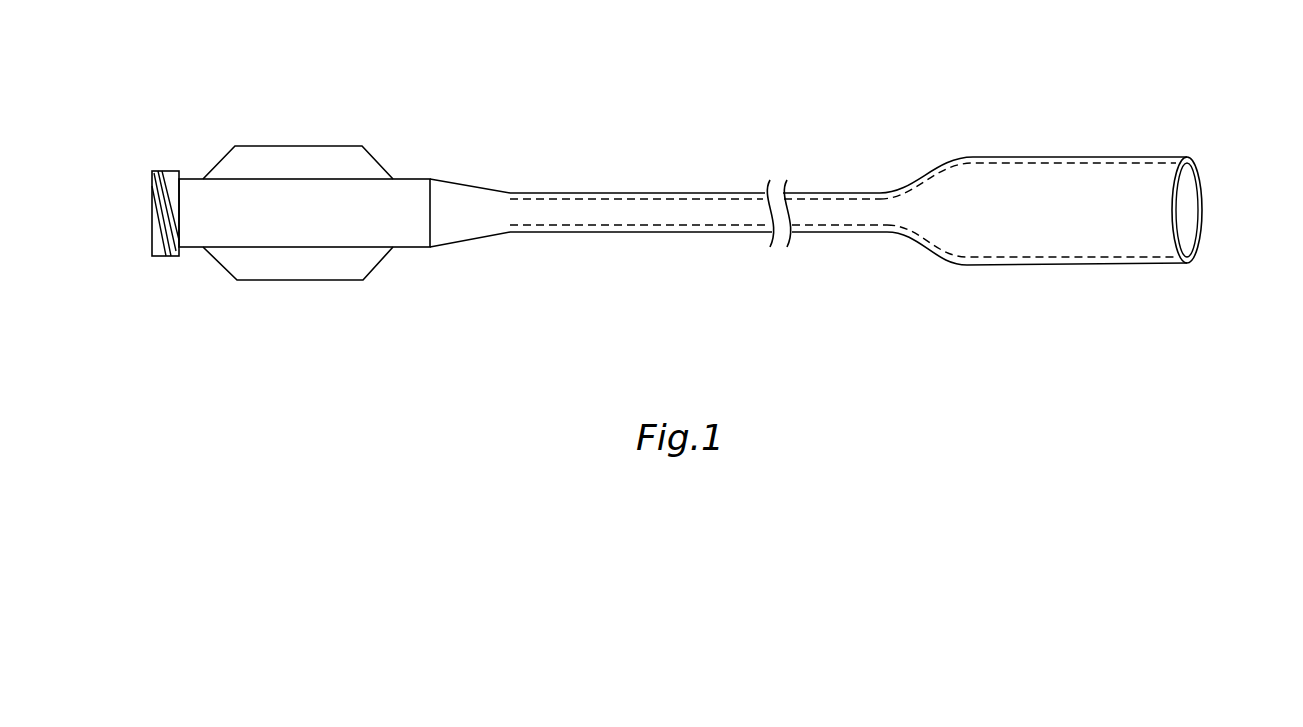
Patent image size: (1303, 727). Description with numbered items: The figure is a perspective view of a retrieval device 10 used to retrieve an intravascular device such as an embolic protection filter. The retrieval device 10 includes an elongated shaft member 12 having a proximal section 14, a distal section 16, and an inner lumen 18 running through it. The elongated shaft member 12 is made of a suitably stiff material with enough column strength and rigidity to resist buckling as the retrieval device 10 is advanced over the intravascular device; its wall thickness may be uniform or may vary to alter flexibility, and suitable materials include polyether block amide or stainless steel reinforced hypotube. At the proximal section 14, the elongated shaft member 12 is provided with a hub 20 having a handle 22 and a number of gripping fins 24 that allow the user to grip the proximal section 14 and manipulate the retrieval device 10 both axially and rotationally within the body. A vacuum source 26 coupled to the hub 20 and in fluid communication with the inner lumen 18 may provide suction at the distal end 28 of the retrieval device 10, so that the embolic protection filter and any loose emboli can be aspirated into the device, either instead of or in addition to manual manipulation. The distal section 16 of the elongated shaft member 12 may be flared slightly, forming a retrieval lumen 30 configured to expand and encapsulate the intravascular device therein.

The retrieval device 10 is at (773, 114).
The elongated shaft member 12 is at (670, 193).
The proximal section 14 is at (546, 181).
The distal section 16 is at (1018, 144).
The inner lumen 18 is at (707, 215).
The hub 20 is at (288, 131).
The handle 22 is at (415, 195).
The gripping fins 24 is at (348, 158).
The vacuum source 26 is at (165, 252).
The distal end 28 is at (1187, 157).
The retrieval lumen 30 is at (1035, 243).